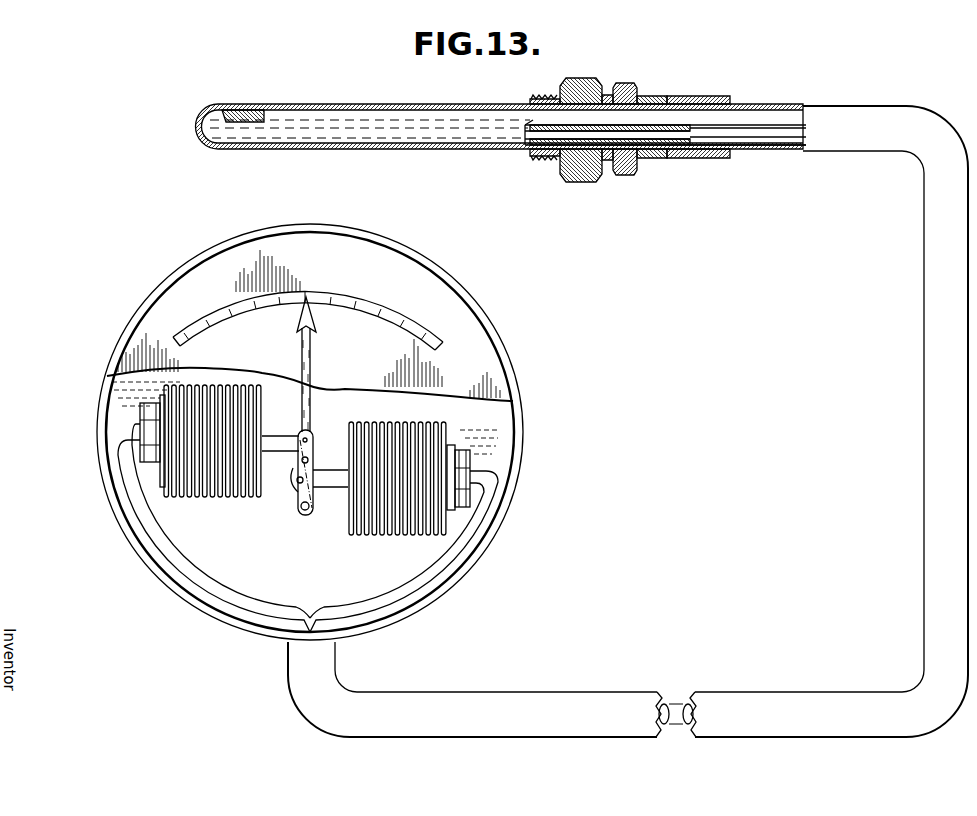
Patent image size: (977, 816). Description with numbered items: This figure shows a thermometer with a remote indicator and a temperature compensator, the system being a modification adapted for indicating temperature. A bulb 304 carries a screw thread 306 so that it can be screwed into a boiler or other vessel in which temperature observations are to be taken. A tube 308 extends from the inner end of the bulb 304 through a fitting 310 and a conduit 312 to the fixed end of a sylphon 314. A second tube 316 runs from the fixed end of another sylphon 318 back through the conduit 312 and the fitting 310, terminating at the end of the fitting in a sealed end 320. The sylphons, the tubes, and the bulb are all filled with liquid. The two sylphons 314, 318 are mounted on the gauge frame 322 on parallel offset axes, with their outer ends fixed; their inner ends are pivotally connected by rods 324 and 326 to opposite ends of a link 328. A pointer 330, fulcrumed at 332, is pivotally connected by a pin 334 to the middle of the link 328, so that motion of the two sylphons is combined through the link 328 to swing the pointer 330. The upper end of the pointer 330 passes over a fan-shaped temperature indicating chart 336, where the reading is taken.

The bulb 304 is at (289, 149).
The screw thread 306 is at (545, 100).
The tube 308 is at (370, 110).
The fitting 310 is at (645, 106).
The conduit 312 is at (940, 273).
The sylphon 314 is at (192, 497).
The tube 316 is at (764, 145).
The sylphon 318 is at (388, 432).
The sealed end 320 is at (531, 135).
The gauge frame 322 is at (108, 413).
The rod 324 is at (262, 437).
The rod 326 is at (322, 488).
The link 328 is at (291, 478).
The pointer 330 is at (312, 360).
The fulcrum 332 is at (305, 512).
The pin 334 is at (312, 440).
The temperature indicating chart 336 is at (356, 312).